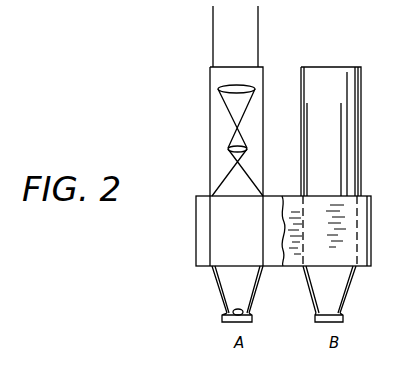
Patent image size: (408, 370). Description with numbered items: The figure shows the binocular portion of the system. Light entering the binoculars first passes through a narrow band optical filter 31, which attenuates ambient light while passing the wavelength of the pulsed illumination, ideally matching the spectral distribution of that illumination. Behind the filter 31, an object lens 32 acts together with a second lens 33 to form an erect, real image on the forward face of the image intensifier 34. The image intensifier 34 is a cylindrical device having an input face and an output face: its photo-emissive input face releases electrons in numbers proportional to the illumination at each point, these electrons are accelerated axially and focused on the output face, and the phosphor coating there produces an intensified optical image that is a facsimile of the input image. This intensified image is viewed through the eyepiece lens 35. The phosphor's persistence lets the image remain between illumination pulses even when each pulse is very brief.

The narrow band optical filter 31 is at (210, 67).
The object lens 32 is at (219, 89).
The lens 33 is at (229, 149).
The image intensifier 34 is at (246, 240).
The eyepiece lens 35 is at (233, 312).